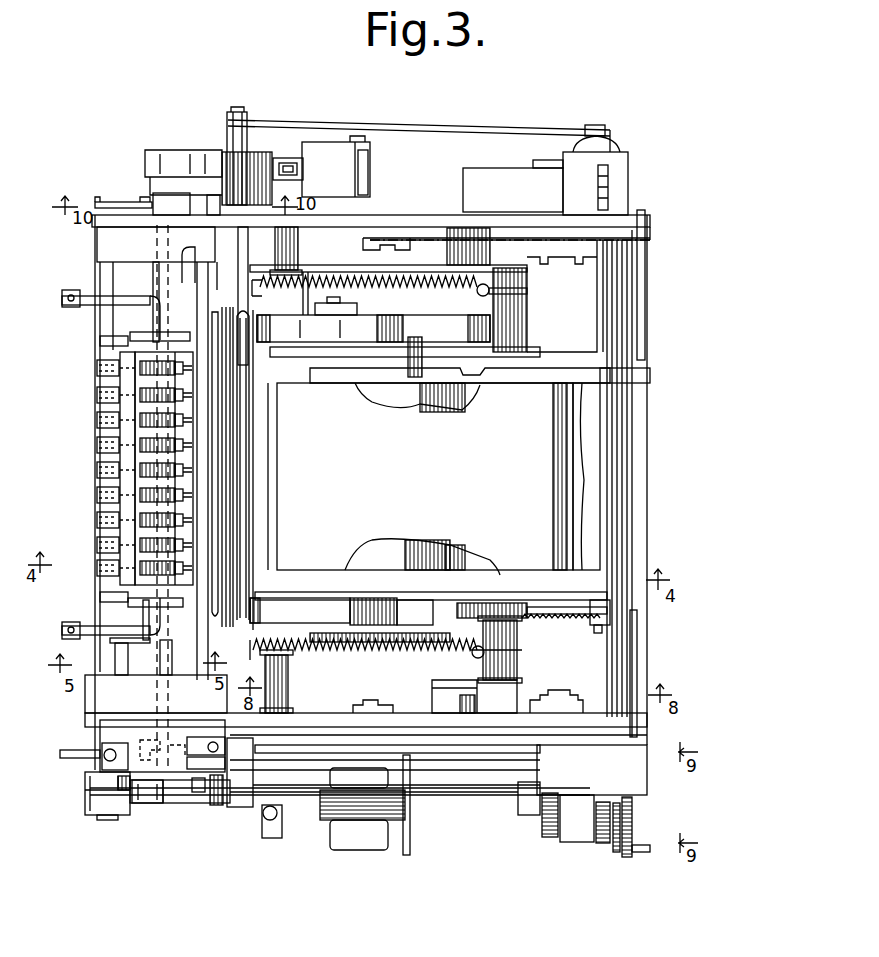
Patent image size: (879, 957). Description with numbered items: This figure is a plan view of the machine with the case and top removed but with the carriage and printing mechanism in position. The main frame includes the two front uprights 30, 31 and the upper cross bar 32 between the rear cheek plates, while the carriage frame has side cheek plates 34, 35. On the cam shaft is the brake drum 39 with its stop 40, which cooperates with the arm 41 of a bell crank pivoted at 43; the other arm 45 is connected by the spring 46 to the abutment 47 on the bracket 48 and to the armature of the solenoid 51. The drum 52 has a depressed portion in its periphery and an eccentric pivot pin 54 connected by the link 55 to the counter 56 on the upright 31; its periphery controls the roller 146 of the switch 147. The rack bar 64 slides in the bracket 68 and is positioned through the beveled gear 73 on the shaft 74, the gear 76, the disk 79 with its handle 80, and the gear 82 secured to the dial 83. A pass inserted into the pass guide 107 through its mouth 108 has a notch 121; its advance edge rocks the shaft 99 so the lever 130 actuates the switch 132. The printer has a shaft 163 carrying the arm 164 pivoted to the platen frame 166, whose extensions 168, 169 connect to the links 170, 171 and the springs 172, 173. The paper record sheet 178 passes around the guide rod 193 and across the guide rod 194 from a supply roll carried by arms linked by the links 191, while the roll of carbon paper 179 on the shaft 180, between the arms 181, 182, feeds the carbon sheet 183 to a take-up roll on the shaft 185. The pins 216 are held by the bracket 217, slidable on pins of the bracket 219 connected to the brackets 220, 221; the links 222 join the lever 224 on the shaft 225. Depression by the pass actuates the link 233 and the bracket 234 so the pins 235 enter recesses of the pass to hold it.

The front upright 30 is at (576, 834).
The front upright 31 is at (496, 178).
The upper cross bar 32 is at (220, 392).
The side cheek plate 34 is at (316, 724).
The side cheek plate 35 is at (358, 226).
The brake drum 39 is at (166, 802).
The stop 40 is at (137, 803).
The arm 41 is at (92, 792).
The pivot 43 is at (108, 820).
The arm 45 is at (294, 800).
The spring 46 is at (265, 820).
The abutment 47 is at (276, 834).
The bracket 48 is at (278, 756).
The solenoid 51 is at (364, 850).
The drum 52 is at (190, 150).
The pivot pin 54 is at (244, 116).
The link 55 is at (486, 126).
The counter 56 is at (628, 184).
The rack bar 64 is at (197, 792).
The bracket 68 is at (256, 744).
The beveled gear 73 is at (216, 805).
The shaft 74 is at (460, 798).
The gear 76 is at (548, 836).
The disk 79 is at (632, 830).
The handle 80 is at (640, 853).
The gear 82 is at (602, 846).
The dial 83 is at (616, 854).
The shaft 99 is at (165, 660).
The pass guide 107 is at (228, 427).
The mouth 108 is at (233, 405).
The notch 121 is at (520, 606).
The lever 130 is at (72, 754).
The switch 132 is at (112, 724).
The roller 146 is at (284, 158).
The switch 147 is at (346, 160).
The shaft 163 is at (300, 248).
The arm 164 is at (341, 611).
The platen frame 166 is at (340, 572).
The extension 168 is at (517, 635).
The extension 169 is at (523, 316).
The link 170 is at (488, 683).
The link 171 is at (446, 268).
The spring 172 is at (395, 660).
The spring 173 is at (428, 298).
The paper record sheet 178 is at (262, 463).
The roll of carbon paper 179 is at (417, 386).
The shaft 180 is at (420, 343).
The arm 181 is at (431, 587).
The arm 182 is at (460, 369).
The carbon sheet 183 is at (380, 386).
The shaft 185 is at (556, 590).
The link 191 is at (493, 238).
The guide rod 193 is at (622, 376).
The guide rod 194 is at (246, 246).
The pin 216 is at (142, 420).
The bracket 217 is at (125, 480).
The bracket 219 is at (190, 292).
The bracket 220 is at (110, 236).
The bracket 221 is at (100, 704).
The link 222 is at (66, 300).
The lever 224 is at (64, 292).
The shaft 225 is at (120, 668).
The link 233 is at (130, 336).
The bracket 234 is at (103, 342).
The pin 235 is at (158, 288).